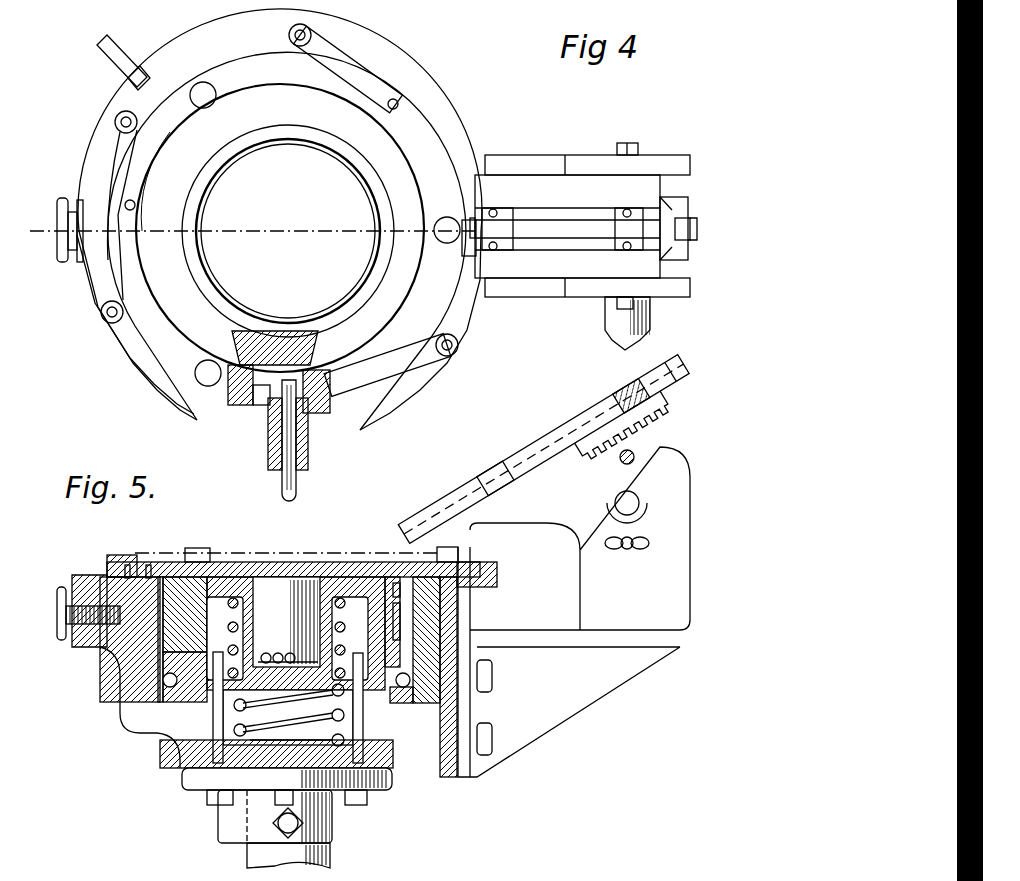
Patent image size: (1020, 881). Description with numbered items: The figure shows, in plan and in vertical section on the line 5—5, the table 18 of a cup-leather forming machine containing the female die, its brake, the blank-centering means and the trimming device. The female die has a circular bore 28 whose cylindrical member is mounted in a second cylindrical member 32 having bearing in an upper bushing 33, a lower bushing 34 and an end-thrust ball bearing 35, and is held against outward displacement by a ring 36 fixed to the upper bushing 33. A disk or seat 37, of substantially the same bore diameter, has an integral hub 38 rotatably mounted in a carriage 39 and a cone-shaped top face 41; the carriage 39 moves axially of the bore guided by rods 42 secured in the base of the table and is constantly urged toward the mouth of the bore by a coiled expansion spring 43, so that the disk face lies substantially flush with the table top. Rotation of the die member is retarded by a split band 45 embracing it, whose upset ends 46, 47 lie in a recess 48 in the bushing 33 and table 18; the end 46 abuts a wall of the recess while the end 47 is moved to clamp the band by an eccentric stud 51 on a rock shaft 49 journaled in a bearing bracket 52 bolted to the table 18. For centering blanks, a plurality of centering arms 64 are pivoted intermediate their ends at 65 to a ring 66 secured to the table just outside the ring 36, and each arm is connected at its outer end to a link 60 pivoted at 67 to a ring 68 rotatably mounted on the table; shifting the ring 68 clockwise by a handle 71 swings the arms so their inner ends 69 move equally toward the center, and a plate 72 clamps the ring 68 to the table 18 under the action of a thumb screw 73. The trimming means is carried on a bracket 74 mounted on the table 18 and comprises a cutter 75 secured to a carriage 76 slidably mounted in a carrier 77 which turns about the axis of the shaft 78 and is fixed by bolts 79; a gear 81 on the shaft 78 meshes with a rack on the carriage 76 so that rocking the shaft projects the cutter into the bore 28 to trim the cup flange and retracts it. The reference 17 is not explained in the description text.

In FIG. 4, the section line 5 is at (431, 230).
In FIG. 5, the shaft 17 is at (247, 855).
In FIG. 5, the table 18 is at (150, 738).
In FIG. 4, the circular bore 28 is at (200, 203).
In FIG. 5, the circular bore 28 is at (240, 577).
In FIG. 4, the second cylindrical member 32 is at (215, 296).
In FIG. 5, the second cylindrical member 32 is at (160, 668).
In FIG. 5, the upper bushing 33 is at (107, 566).
In FIG. 5, the bushing 34 is at (160, 690).
In FIG. 5, the end-thrust ball bearing 35 is at (165, 700).
In FIG. 5, the ring 36 is at (160, 577).
In FIG. 4, the disk or seat 37 is at (307, 234).
In FIG. 5, the disk or seat 37 is at (330, 577).
In FIG. 5, the hub 38 is at (286, 622).
In FIG. 5, the carriage 39 is at (208, 672).
In FIG. 5, the cone-shaped top face 41 is at (282, 577).
In FIG. 5, the rods 42 is at (175, 772).
In FIG. 5, the coiled expansion spring 43 is at (328, 718).
In FIG. 4, the split band 45 is at (234, 340).
In FIG. 5, the split band 45 is at (150, 640).
In FIG. 4, the upset end 46 is at (232, 406).
In FIG. 4, the upset end 47 is at (258, 410).
In FIG. 4, the recess 48 is at (318, 412).
In FIG. 4, the rock shaft 49 is at (300, 478).
In FIG. 4, the eccentric stud 51 is at (330, 372).
In FIG. 4, the bearing bracket 52 is at (268, 462).
In FIG. 4, the link 60 is at (218, 48).
In FIG. 4, the centering arms 64 is at (162, 130).
In FIG. 5, the centering arms 64 is at (410, 562).
In FIG. 4, the pivot 65 is at (136, 204).
In FIG. 4, the ring 66 is at (263, 70).
In FIG. 5, the ring 66 is at (125, 562).
In FIG. 4, the pivot 67 is at (113, 122).
In FIG. 4, the ring 68 is at (102, 155).
In FIG. 5, the ring 68 is at (497, 582).
In FIG. 4, the inner ends 69 is at (208, 98).
In FIG. 5, the inner ends 69 is at (205, 548).
In FIG. 4, the handle 71 is at (100, 62).
In FIG. 4, the plate 72 is at (74, 205).
In FIG. 5, the plate 72 is at (72, 582).
In FIG. 4, the thumb screw 73 is at (64, 255).
In FIG. 5, the thumb screw 73 is at (57, 618).
In FIG. 4, the bracket 74 is at (690, 288).
In FIG. 5, the bracket 74 is at (574, 662).
In FIG. 4, the cutter 75 is at (680, 228).
In FIG. 5, the cutter 75 is at (412, 540).
In FIG. 4, the carriage 76 is at (698, 252).
In FIG. 5, the carriage 76 is at (692, 385).
In FIG. 5, the carrier 77 is at (580, 538).
In FIG. 4, the shaft 78 is at (640, 346).
In FIG. 5, the shaft 78 is at (640, 504).
In FIG. 5, the bolts 79 is at (636, 458).
In FIG. 5, the gear 81 is at (660, 445).